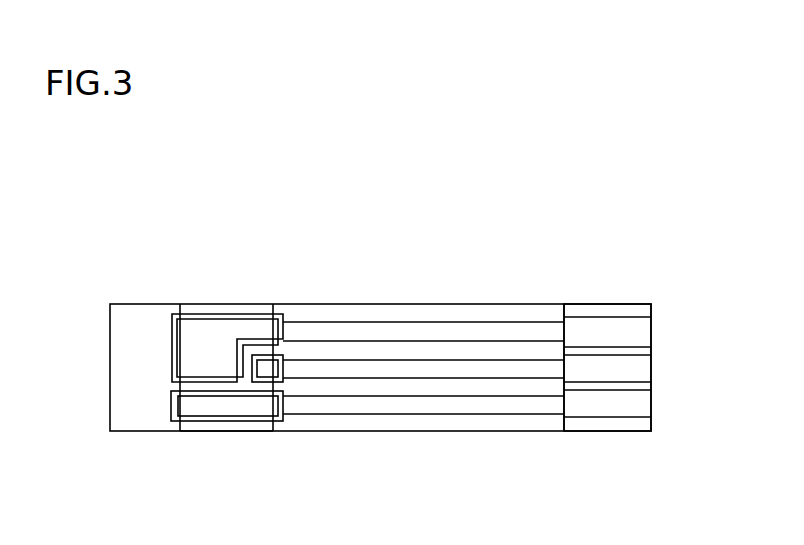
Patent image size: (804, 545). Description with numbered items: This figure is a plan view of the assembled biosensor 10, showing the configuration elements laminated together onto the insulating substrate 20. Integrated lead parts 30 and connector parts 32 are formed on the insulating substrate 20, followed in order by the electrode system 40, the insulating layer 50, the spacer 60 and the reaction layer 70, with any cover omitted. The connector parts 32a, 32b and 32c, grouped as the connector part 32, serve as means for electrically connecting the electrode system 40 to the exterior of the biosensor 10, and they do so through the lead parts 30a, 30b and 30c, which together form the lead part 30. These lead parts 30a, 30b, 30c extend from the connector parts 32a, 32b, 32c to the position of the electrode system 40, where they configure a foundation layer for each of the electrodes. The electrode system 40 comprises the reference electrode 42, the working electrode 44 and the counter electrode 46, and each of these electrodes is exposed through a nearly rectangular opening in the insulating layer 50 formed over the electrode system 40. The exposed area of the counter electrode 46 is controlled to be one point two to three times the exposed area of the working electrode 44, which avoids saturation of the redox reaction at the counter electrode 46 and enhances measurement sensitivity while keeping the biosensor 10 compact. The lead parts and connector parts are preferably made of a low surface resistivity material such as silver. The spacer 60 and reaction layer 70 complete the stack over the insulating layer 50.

The biosensor 10 is at (134, 219).
The insulating substrate 20 is at (583, 303).
The lead part 30 is at (423, 323).
The lead part 30a is at (348, 368).
The lead part 30b is at (393, 405).
The lead part 30c is at (305, 332).
The connector part 32 is at (657, 362).
The connector part 32a is at (651, 368).
The connector part 32b is at (636, 400).
The connector part 32c is at (651, 333).
The electrode system 40 is at (227, 443).
The reference electrode 42 is at (260, 383).
The working electrode 44 is at (228, 421).
The counter electrode 46 is at (280, 487).
The insulating layer 50 is at (134, 302).
The spacer 60 is at (523, 303).
The reaction layer 70 is at (208, 302).